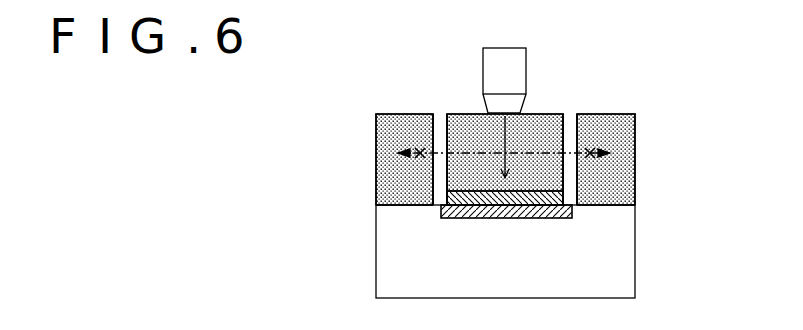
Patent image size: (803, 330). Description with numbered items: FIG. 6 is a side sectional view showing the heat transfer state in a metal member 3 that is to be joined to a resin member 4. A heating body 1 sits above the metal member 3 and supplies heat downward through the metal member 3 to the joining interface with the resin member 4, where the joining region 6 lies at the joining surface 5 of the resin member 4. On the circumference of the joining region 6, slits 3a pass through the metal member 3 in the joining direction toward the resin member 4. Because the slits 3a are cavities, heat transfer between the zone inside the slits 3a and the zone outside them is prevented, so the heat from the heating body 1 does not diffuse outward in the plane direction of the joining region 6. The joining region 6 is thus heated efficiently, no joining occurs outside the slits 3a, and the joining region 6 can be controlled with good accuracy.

The heating body 1 is at (526, 58).
The metal member 3 is at (635, 154).
The slits 3a is at (439, 123).
The resin member 4 is at (635, 247).
The joining surface 5 is at (572, 212).
The joining region 6 is at (467, 191).